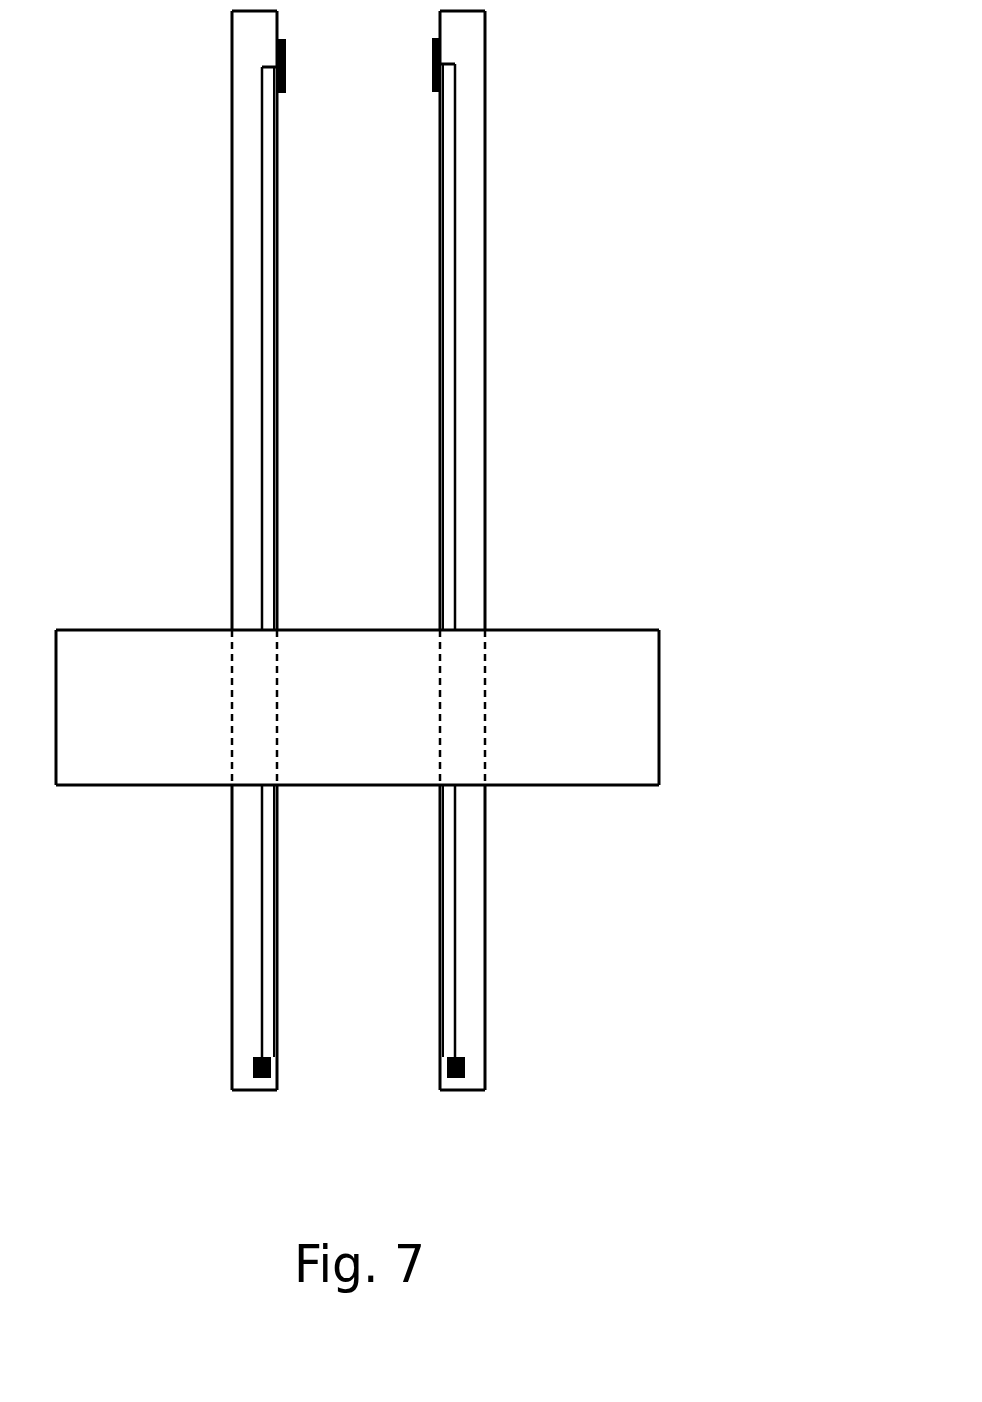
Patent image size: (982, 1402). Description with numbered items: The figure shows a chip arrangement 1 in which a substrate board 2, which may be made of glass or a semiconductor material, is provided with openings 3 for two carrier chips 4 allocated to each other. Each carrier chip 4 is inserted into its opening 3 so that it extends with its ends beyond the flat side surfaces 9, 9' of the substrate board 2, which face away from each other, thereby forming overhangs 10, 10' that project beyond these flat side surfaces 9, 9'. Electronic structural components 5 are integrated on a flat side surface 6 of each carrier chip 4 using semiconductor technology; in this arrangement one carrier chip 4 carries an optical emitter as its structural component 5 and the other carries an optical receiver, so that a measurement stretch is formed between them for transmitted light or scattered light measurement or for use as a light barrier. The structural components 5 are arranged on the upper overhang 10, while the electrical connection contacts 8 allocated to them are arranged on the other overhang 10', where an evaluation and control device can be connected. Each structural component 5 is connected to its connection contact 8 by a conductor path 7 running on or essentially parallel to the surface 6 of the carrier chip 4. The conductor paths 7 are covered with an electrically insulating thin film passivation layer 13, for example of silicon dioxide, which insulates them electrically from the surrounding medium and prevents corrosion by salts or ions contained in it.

The chip arrangement 1 is at (723, 952).
The substrate board 2 is at (636, 688).
The opening 3 is at (422, 612).
The carrier chip 4 is at (240, 310).
The structural component 5 is at (433, 72).
The flat side surface 6 is at (438, 151).
The conductor path 7 is at (455, 277).
The connection contact 8 is at (445, 1067).
The flat side surface of the substrate board 9 is at (358, 571).
The flat side surface of the substrate board 9' is at (360, 823).
The overhang 10 is at (368, 91).
The overhang 10' is at (348, 1027).
The passivation layer 13 is at (443, 397).